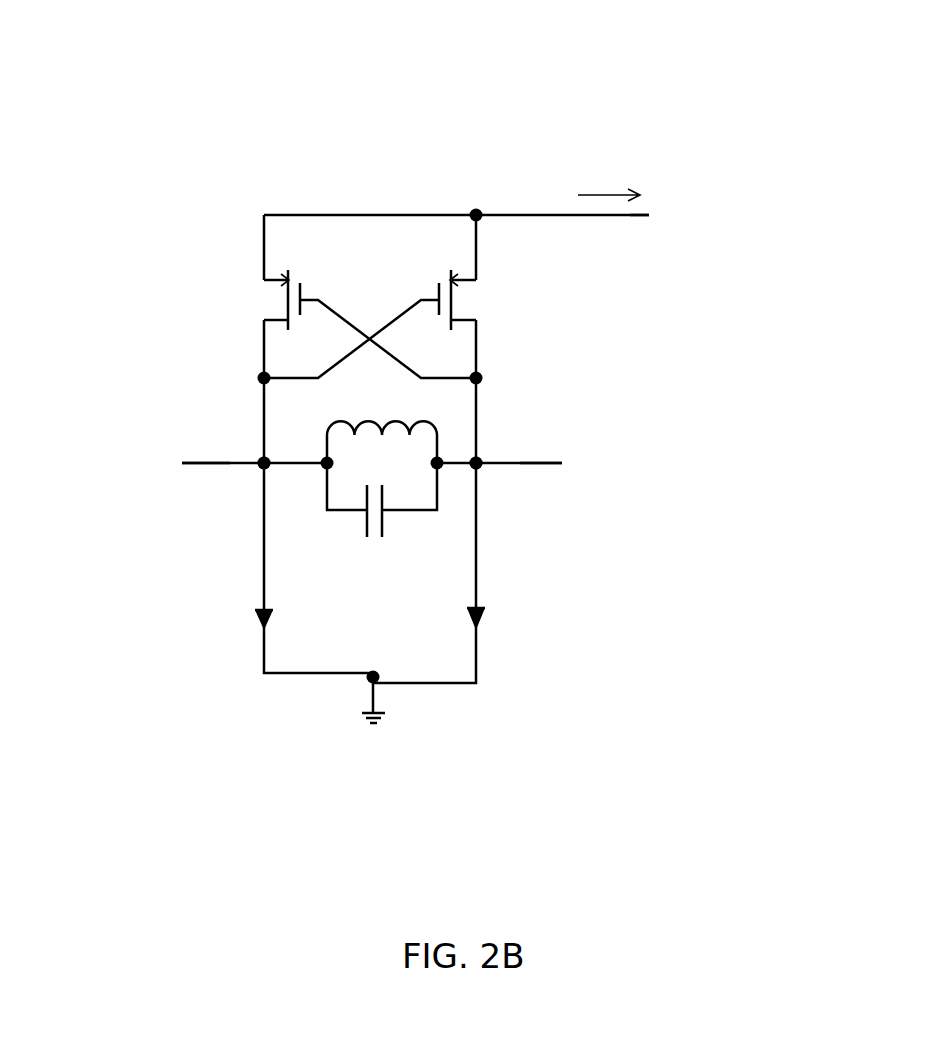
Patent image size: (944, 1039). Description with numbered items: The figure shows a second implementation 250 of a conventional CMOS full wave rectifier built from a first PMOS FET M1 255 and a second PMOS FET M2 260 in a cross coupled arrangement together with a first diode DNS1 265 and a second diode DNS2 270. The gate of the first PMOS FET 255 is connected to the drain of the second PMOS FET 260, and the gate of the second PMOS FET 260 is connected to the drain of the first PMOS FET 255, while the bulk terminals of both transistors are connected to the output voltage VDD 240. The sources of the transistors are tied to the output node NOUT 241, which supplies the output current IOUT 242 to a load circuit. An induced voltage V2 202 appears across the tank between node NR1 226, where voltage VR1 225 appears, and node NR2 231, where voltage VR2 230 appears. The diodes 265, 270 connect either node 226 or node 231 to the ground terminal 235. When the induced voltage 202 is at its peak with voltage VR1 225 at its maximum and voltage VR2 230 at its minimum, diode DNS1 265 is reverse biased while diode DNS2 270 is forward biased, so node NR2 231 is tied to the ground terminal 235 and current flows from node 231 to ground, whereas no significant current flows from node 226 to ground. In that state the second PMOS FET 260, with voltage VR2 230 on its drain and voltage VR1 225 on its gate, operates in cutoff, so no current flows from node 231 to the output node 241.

The second implementation of a conventional CMOS full wave rectifier 250 is at (102, 42).
The output node N_OUT 241 is at (473, 175).
The output current I_OUT 242 is at (587, 157).
The output voltage V_DD 240 is at (687, 198).
The first PMOS FET M_1 255 is at (212, 302).
The second PMOS FET M_2 260 is at (527, 293).
The voltage V_R1 225 is at (138, 475).
The node N_R1 226 is at (225, 500).
The voltage V_R2 230 is at (605, 468).
The node N_R2 231 is at (517, 503).
The induced voltage V_2 202 is at (358, 475).
The first diode D_NS1 265 is at (210, 632).
The second diode D_NS2 270 is at (545, 617).
The ground terminal 235 is at (390, 717).